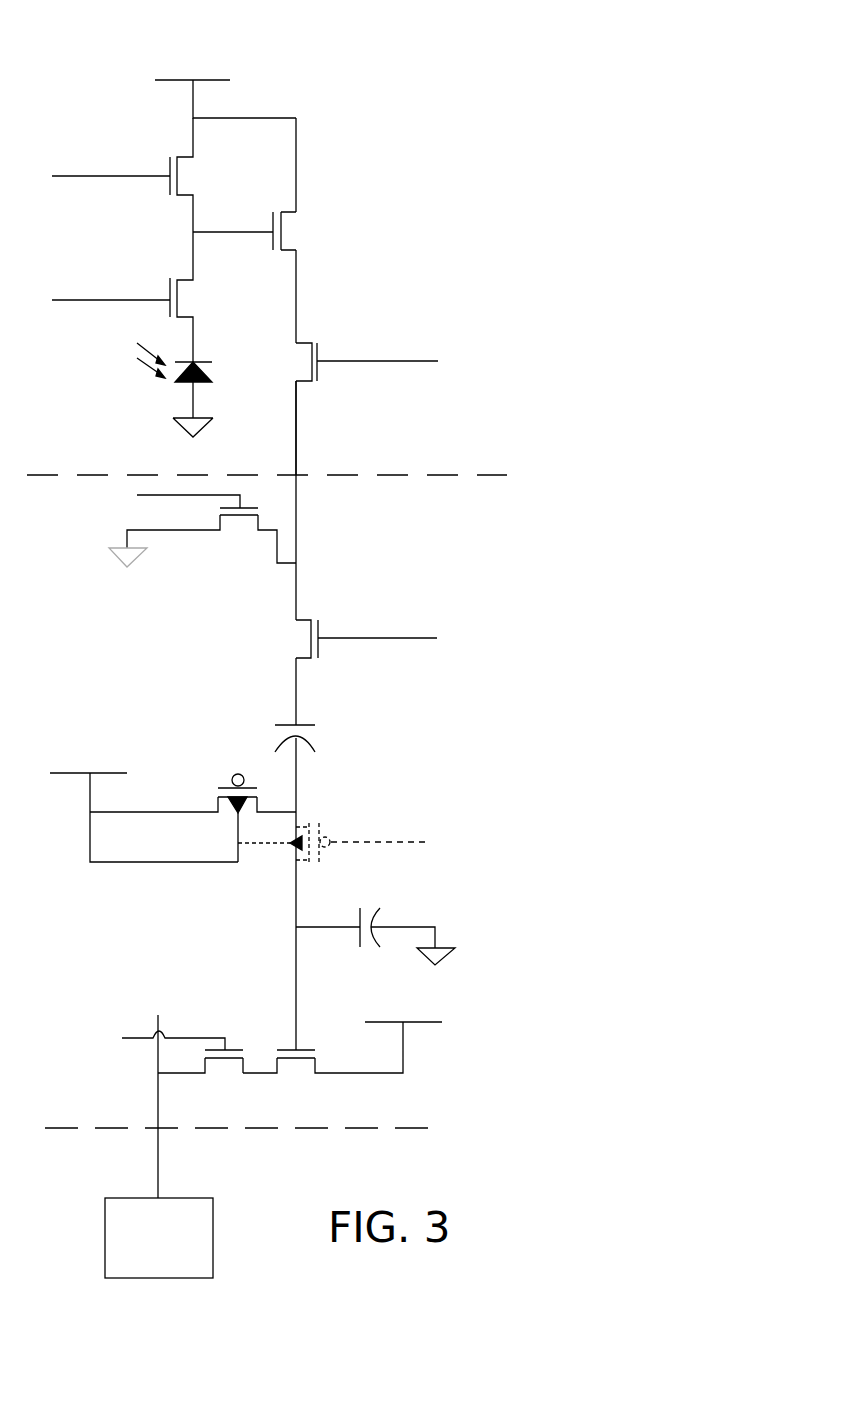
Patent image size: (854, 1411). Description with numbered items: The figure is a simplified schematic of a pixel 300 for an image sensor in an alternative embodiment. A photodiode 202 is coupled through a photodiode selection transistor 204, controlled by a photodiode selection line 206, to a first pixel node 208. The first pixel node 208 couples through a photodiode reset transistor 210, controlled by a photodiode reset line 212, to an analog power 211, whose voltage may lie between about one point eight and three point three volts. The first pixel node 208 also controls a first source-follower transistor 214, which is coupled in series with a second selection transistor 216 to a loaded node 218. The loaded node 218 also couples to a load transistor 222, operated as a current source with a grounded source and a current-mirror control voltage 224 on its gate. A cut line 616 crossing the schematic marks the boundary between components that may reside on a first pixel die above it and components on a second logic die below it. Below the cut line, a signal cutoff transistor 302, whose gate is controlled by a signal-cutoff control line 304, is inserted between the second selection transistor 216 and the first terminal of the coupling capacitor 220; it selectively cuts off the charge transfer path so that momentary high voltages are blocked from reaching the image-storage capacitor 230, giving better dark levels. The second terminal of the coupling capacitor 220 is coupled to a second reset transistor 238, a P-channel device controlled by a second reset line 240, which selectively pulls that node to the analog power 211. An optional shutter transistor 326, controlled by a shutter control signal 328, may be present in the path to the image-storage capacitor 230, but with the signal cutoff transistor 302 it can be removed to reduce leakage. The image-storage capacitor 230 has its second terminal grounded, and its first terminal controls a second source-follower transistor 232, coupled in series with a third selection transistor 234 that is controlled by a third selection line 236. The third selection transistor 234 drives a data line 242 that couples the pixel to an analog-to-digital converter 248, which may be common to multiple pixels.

The pixel 300 is at (418, 53).
The analog power 211 is at (212, 72).
The photodiode reset transistor 210 is at (178, 177).
The photodiode reset line 212 is at (127, 175).
The first pixel node 208 is at (193, 223).
The first source-follower transistor 214 is at (288, 232).
The photodiode selection transistor 204 is at (172, 280).
The photodiode selection line 206 is at (120, 298).
The photodiode 202 is at (177, 380).
The second selection transistor 216 is at (317, 355).
The loaded node 218 is at (297, 453).
The cut line 616 is at (487, 477).
The load transistor 222 is at (260, 523).
The current-mirror control voltage 224 is at (173, 495).
The signal cutoff transistor 302 is at (313, 632).
The signal-cutoff control line 304 is at (395, 638).
The coupling capacitor 220 is at (315, 737).
The second reset line 240 is at (237, 773).
The second reset transistor 238 is at (230, 812).
The shutter transistor 326 is at (327, 825).
The shutter control signal 328 is at (397, 842).
The image-storage capacitor 230 is at (367, 915).
The second source-follower transistor 232 is at (287, 1050).
The third selection transistor 234 is at (225, 1050).
The third selection line 236 is at (140, 1038).
The data line 242 is at (163, 1015).
The analog-to-digital converter 248 is at (140, 1265).